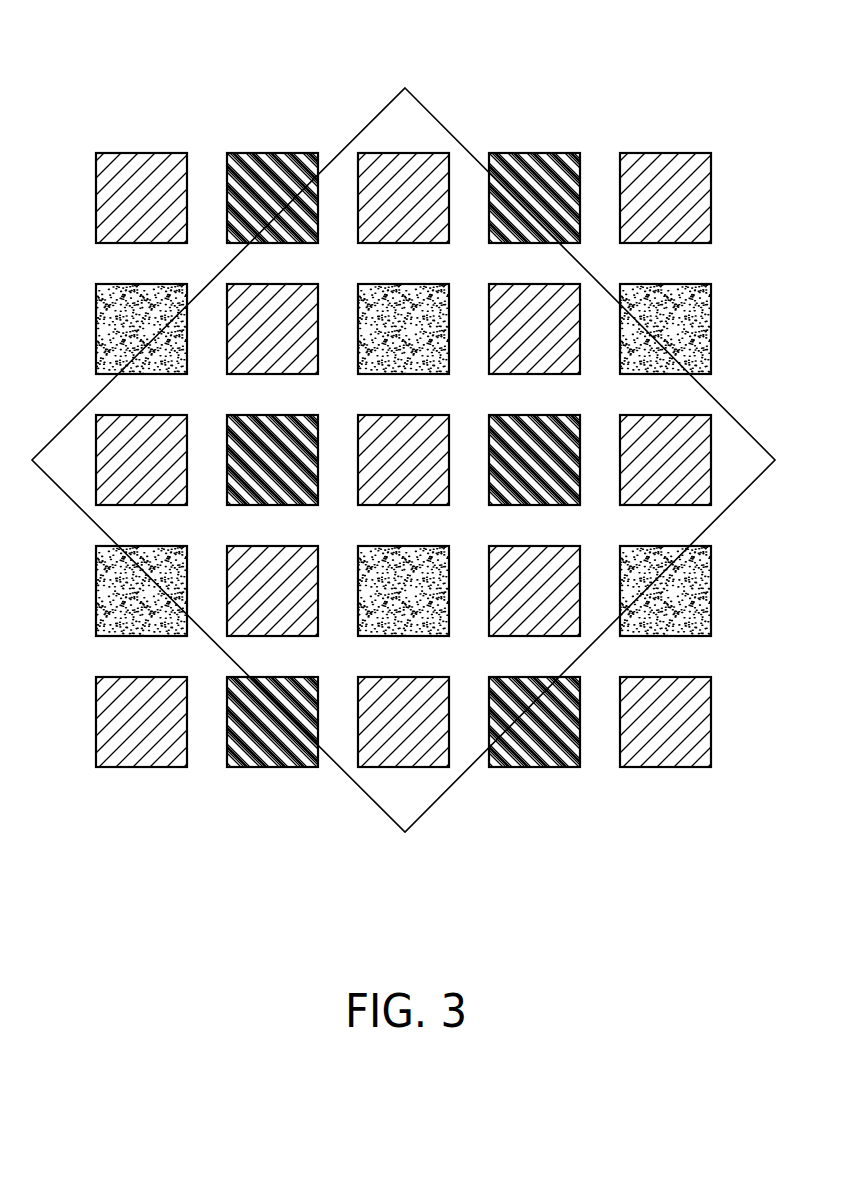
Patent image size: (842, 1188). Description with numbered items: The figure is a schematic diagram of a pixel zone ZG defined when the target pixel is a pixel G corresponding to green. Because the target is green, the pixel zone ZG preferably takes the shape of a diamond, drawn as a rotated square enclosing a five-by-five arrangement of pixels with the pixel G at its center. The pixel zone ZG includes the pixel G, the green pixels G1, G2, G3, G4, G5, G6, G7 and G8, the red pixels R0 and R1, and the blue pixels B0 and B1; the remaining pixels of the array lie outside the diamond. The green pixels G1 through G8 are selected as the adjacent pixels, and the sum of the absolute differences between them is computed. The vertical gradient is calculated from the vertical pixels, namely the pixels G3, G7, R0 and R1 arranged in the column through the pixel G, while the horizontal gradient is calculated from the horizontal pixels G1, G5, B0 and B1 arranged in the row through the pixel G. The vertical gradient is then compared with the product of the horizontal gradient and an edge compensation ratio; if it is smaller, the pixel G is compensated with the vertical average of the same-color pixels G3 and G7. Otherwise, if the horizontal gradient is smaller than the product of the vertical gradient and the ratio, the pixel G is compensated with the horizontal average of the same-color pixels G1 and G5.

The pixel zone ZG is at (445, 128).
The pixel G is at (403, 460).
The pixel G1 is at (141, 460).
The pixel G2 is at (272, 329).
The pixel G3 is at (403, 198).
The pixel G4 is at (534, 329).
The pixel G5 is at (665, 460).
The pixel G6 is at (534, 591).
The pixel G7 is at (403, 722).
The pixel G8 is at (272, 591).
The pixel B0 is at (272, 460).
The pixel B1 is at (534, 460).
The pixel R0 is at (403, 329).
The pixel R1 is at (403, 591).